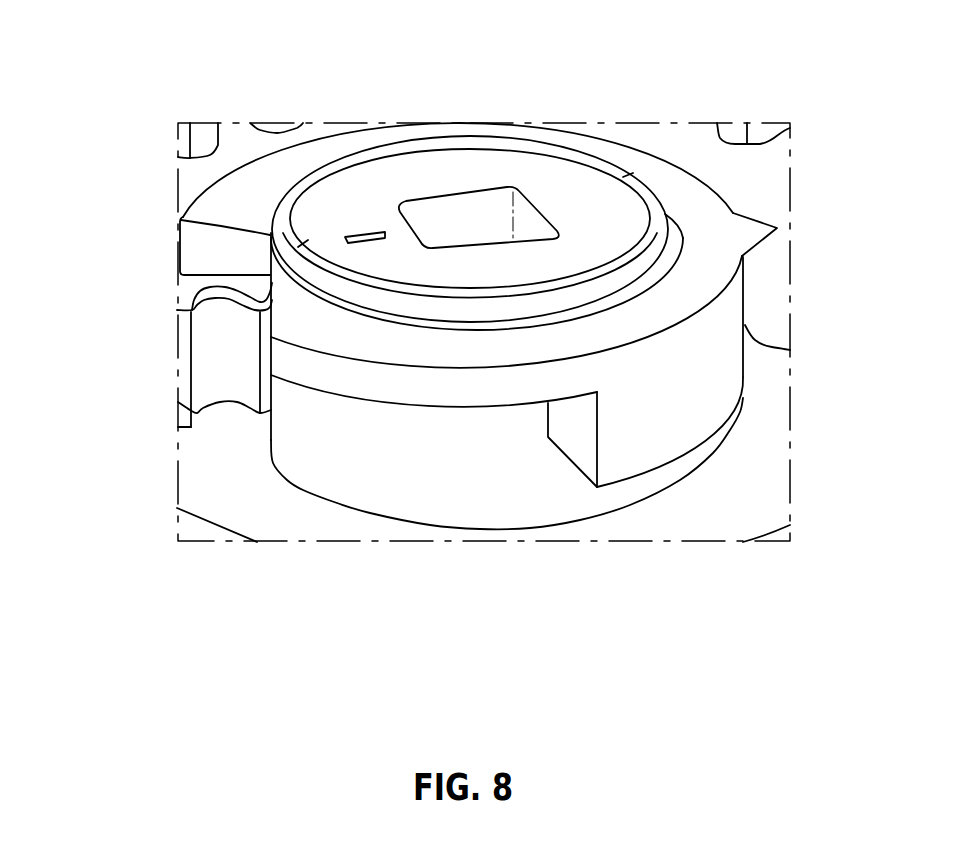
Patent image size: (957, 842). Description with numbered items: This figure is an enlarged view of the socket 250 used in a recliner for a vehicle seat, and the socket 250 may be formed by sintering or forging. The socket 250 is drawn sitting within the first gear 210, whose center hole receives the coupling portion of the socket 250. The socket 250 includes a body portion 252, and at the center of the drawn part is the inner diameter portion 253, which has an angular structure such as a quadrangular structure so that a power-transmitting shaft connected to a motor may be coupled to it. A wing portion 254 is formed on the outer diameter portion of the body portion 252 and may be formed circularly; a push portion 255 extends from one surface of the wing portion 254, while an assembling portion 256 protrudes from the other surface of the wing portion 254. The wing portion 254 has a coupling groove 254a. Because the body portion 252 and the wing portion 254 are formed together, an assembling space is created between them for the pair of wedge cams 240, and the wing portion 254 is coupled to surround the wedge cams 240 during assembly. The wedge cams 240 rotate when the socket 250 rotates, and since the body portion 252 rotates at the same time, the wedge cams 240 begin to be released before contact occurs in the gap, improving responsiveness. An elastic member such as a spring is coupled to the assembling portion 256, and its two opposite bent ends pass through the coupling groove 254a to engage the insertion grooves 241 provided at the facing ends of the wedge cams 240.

The first gear 210 is at (232, 492).
The wedge cam 240 is at (177, 292).
The insertion groove 241 is at (213, 343).
The socket 250 is at (461, 369).
The body portion 252 is at (500, 463).
The inner diameter portion 253 is at (467, 232).
The wing portion 254 is at (357, 383).
The coupling groove 254a is at (219, 255).
The push portion 255 is at (620, 447).
The assembling portion 256 is at (637, 273).